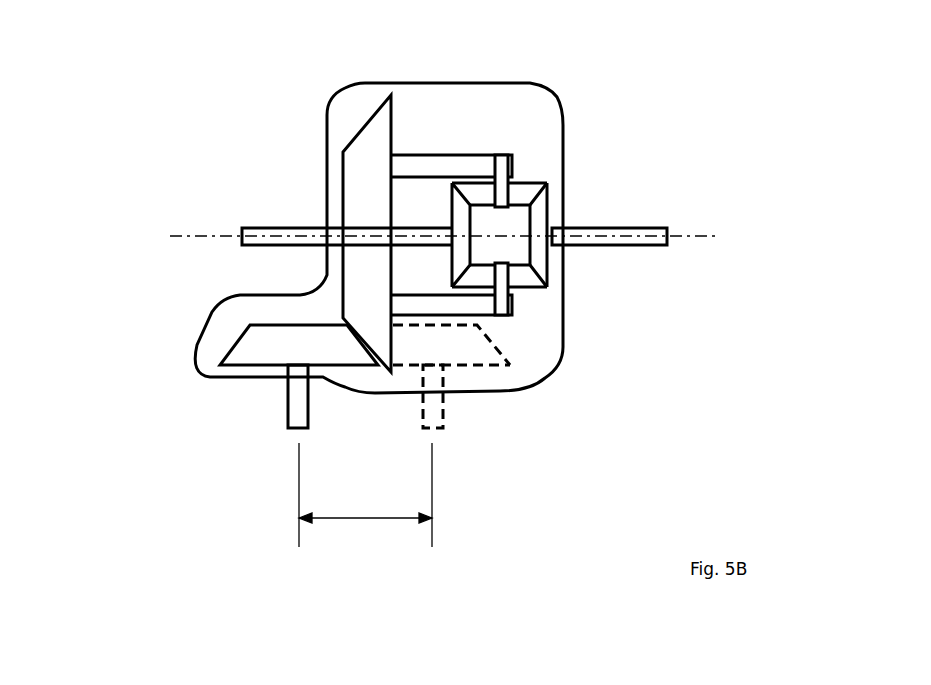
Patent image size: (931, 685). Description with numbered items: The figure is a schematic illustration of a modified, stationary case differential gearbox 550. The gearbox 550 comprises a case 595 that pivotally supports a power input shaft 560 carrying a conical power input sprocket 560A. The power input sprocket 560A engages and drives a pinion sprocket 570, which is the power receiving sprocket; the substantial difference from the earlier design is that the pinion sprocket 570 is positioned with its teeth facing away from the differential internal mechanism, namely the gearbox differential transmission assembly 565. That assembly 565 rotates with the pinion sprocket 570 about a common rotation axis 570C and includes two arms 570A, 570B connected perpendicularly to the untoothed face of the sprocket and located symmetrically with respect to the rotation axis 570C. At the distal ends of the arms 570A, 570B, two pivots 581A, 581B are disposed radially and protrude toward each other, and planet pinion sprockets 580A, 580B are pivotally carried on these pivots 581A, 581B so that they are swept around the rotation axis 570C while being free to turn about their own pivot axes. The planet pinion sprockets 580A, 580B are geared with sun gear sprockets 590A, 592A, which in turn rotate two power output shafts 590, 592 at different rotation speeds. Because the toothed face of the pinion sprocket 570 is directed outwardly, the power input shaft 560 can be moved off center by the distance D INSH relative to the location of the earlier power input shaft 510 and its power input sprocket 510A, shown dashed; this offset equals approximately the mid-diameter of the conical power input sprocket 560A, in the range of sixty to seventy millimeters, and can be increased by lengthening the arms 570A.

The modified stationary case differential gearbox 550 is at (168, 463).
The case 595 is at (557, 97).
The pinion sprocket 570 is at (363, 160).
The arm 570A is at (455, 162).
The arm 570B is at (477, 317).
The rotation axis 570C is at (187, 232).
The power output shaft 592 is at (260, 248).
The sun gear sprocket 592A is at (458, 213).
The power output shaft 590 is at (620, 248).
The sun gear sprocket 590A is at (542, 215).
The planet pinion sprocket 580A is at (523, 193).
The planet pinion sprocket 580B is at (520, 288).
The pivot 581A is at (508, 178).
The pivot 581B is at (513, 303).
The gearbox differential transmission assembly 565 is at (528, 350).
The power input sprocket 510A is at (465, 348).
The power input shaft 510 is at (447, 423).
The power input sprocket 560A is at (260, 355).
The power input shaft 560 is at (287, 420).